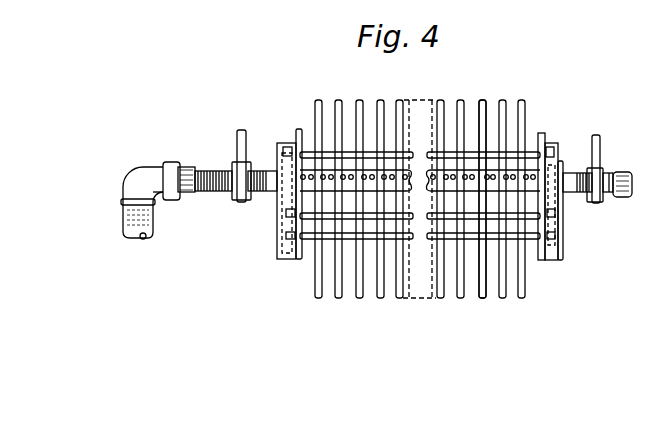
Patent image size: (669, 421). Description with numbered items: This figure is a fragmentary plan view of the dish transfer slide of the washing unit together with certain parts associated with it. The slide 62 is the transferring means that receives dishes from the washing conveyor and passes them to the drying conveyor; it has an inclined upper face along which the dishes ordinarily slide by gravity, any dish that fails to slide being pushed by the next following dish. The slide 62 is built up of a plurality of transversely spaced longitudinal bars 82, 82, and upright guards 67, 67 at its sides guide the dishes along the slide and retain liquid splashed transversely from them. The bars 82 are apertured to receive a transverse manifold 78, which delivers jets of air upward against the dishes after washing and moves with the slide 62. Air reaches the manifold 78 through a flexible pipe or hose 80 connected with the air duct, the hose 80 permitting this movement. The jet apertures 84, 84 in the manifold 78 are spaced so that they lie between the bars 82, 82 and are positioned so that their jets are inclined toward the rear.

The slide 62 is at (482, 99).
The upright guards 67 is at (276, 151).
The transverse manifold 78 is at (272, 188).
The flexible pipe or hose 80 is at (152, 227).
The longitudinal bars 82 is at (357, 283).
The jet apertures 84 is at (351, 174).